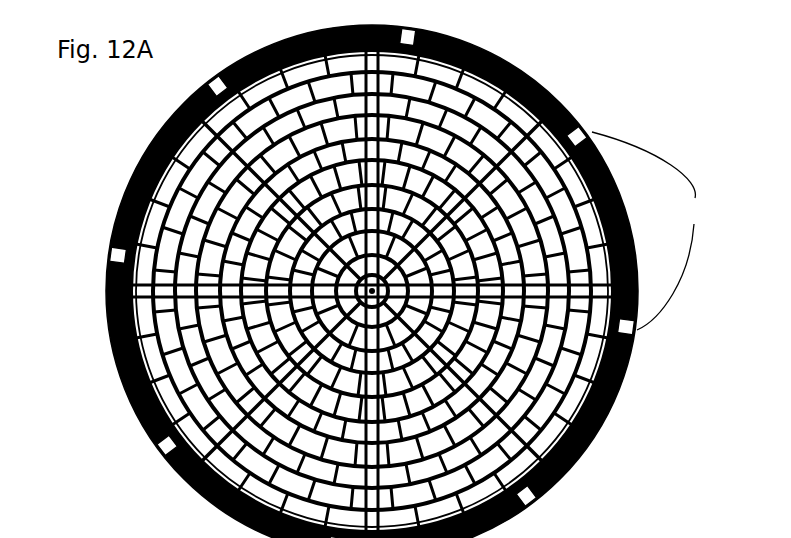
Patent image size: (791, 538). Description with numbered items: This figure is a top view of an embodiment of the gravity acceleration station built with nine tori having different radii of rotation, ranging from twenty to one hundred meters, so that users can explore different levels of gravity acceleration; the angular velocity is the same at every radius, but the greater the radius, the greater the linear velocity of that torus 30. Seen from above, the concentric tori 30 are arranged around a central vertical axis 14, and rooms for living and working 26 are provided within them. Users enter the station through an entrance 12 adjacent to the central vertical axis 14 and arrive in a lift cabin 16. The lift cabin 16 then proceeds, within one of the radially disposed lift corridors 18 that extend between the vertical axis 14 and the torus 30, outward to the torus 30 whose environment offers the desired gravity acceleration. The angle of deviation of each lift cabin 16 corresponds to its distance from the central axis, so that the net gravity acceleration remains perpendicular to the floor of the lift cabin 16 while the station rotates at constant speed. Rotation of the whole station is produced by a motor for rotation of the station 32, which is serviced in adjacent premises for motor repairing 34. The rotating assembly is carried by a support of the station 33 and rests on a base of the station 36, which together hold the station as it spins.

The entrance 12 is at (118, 365).
The vertical axis 14 is at (137, 410).
The lift cabin 16 is at (112, 270).
The lift corridors 18 is at (132, 318).
The rooms for living and working 26 is at (137, 167).
The torus 30 is at (161, 129).
The motor for rotation of the station 32 is at (582, 134).
The support of the station 33 is at (587, 133).
The premises for motor repairing 34 is at (651, 231).
The base of the station 36 is at (597, 427).